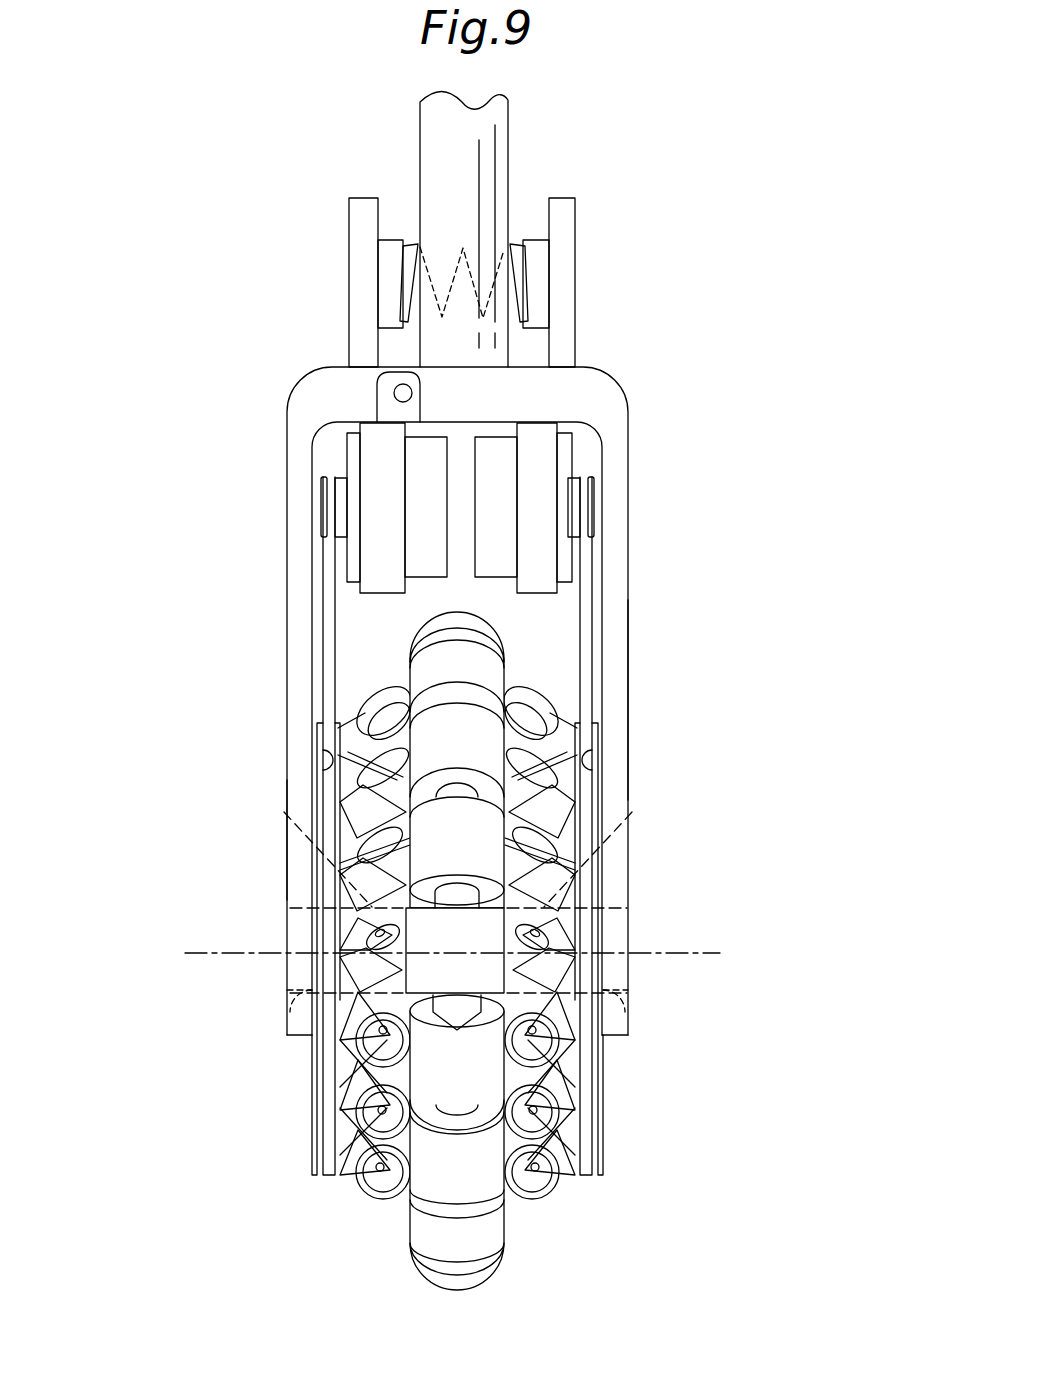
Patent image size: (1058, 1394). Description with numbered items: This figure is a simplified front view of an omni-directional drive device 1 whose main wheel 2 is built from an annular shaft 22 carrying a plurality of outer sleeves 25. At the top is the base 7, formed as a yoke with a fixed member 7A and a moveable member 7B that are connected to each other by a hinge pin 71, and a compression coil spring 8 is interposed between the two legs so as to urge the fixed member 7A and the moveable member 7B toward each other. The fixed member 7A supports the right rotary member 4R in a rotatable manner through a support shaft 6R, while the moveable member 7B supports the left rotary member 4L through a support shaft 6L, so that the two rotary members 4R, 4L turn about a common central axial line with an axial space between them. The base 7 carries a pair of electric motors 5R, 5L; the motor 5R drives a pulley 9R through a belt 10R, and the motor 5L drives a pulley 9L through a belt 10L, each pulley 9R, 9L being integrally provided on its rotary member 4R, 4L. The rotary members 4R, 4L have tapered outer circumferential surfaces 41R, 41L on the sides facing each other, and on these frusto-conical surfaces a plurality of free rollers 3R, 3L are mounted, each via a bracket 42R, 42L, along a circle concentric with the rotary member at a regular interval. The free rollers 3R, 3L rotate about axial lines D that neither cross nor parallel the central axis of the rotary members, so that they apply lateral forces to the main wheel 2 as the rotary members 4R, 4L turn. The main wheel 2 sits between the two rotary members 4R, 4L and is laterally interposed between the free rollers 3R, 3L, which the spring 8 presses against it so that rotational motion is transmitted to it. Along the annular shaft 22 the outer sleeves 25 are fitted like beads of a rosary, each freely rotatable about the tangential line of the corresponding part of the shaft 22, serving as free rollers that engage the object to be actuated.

The roller guide device 1 is at (670, 522).
The main wheel 2 is at (508, 1284).
The free roller 3L is at (368, 716).
The free roller 3R is at (545, 706).
The left rotary member 4L is at (345, 1062).
The right rotary member 4R is at (565, 1072).
The electric motor 5L is at (418, 467).
The electric motor 5R is at (500, 478).
The support shaft 6L is at (283, 1013).
The support shaft 6R is at (630, 1015).
The base 7 is at (590, 386).
The fixed member 7A is at (622, 705).
The moveable member 7B is at (290, 855).
The hinge pin 71 is at (393, 394).
The compression coil spring 8 is at (510, 247).
The pulley 9L is at (326, 752).
The pulley 9R is at (588, 766).
The belt 10L is at (330, 643).
The belt 10R is at (588, 607).
The annular shaft 22 is at (450, 1112).
The outer sleeve 25 is at (437, 1062).
The tapered outer circumferential surface 41L is at (380, 935).
The tapered outer circumferential surface 41R is at (553, 1017).
The bracket 42L is at (375, 1172).
The bracket 42R is at (567, 1143).
The axial line D is at (459, 840).